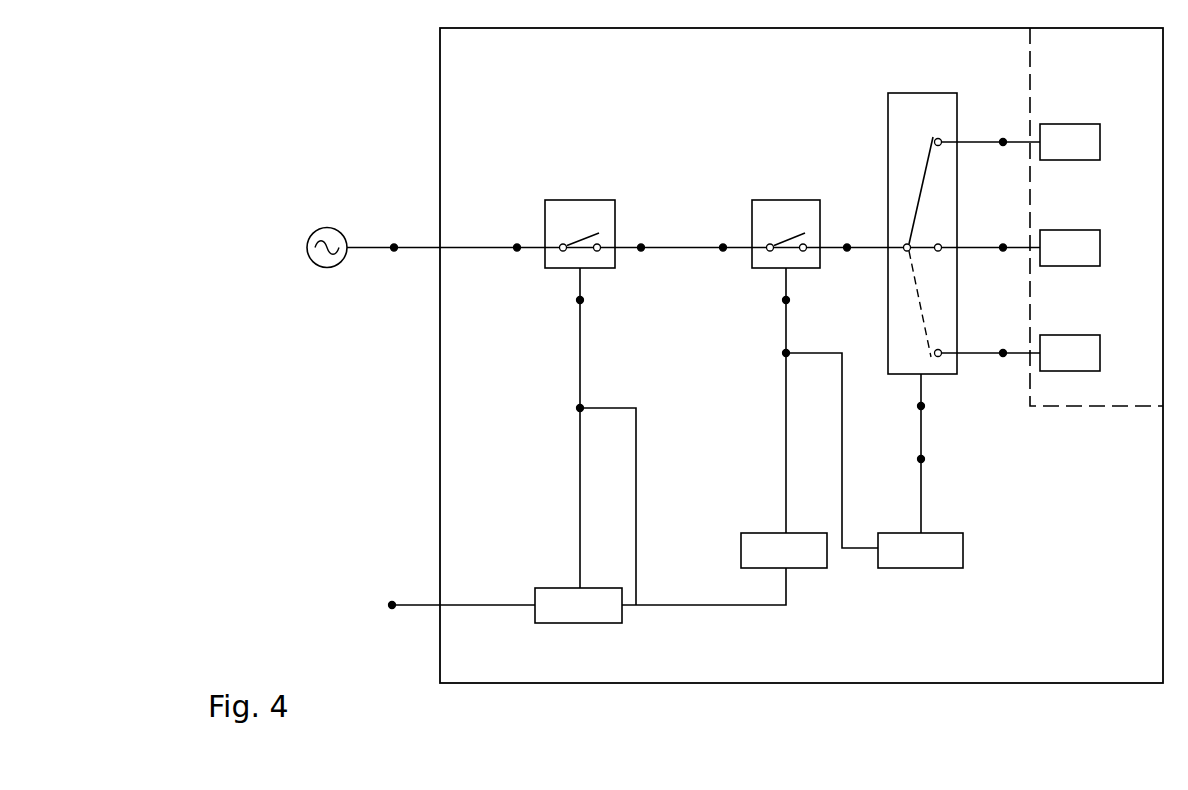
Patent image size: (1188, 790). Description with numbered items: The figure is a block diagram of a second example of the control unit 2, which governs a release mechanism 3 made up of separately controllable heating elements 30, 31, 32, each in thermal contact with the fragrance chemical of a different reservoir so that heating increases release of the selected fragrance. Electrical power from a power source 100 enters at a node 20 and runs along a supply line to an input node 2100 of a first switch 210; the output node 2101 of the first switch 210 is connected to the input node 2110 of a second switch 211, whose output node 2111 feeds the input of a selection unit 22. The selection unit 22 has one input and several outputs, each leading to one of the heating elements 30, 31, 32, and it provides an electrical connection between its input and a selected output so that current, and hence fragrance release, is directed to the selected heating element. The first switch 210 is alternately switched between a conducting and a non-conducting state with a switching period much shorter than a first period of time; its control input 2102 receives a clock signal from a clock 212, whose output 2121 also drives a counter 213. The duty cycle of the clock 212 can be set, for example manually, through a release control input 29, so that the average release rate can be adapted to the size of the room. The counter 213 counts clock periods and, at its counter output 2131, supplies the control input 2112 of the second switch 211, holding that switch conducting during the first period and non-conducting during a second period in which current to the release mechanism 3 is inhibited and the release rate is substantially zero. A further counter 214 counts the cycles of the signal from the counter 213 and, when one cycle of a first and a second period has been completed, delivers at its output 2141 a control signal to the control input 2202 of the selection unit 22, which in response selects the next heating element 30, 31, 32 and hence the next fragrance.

The control unit 2 is at (503, 66).
The release mechanism 3 is at (1083, 66).
The power source 100 is at (328, 227).
The supply input node 20 is at (394, 244).
The input node of first switch 2100 is at (517, 244).
The first switch 210 is at (581, 200).
The output node of first switch 2101 is at (641, 244).
The input node of second switch 2110 is at (723, 244).
The second switch 211 is at (787, 200).
The output node of second switch 2111 is at (847, 244).
The selection unit 22 is at (922, 93).
The heating element 30 is at (1100, 142).
The heating element 31 is at (1100, 248).
The heating element 32 is at (1100, 353).
The control input of first switch 2102 is at (576, 300).
The control input of second switch 2112 is at (782, 300).
The counter output 2131 is at (782, 353).
The output of clock 2121 is at (576, 408).
The control input of selection unit 2202 is at (925, 406).
The output of counter 2141 is at (925, 459).
The release control input 29 is at (392, 601).
The clock 212 is at (578, 623).
The counter 213 is at (820, 568).
The counter 214 is at (921, 568).